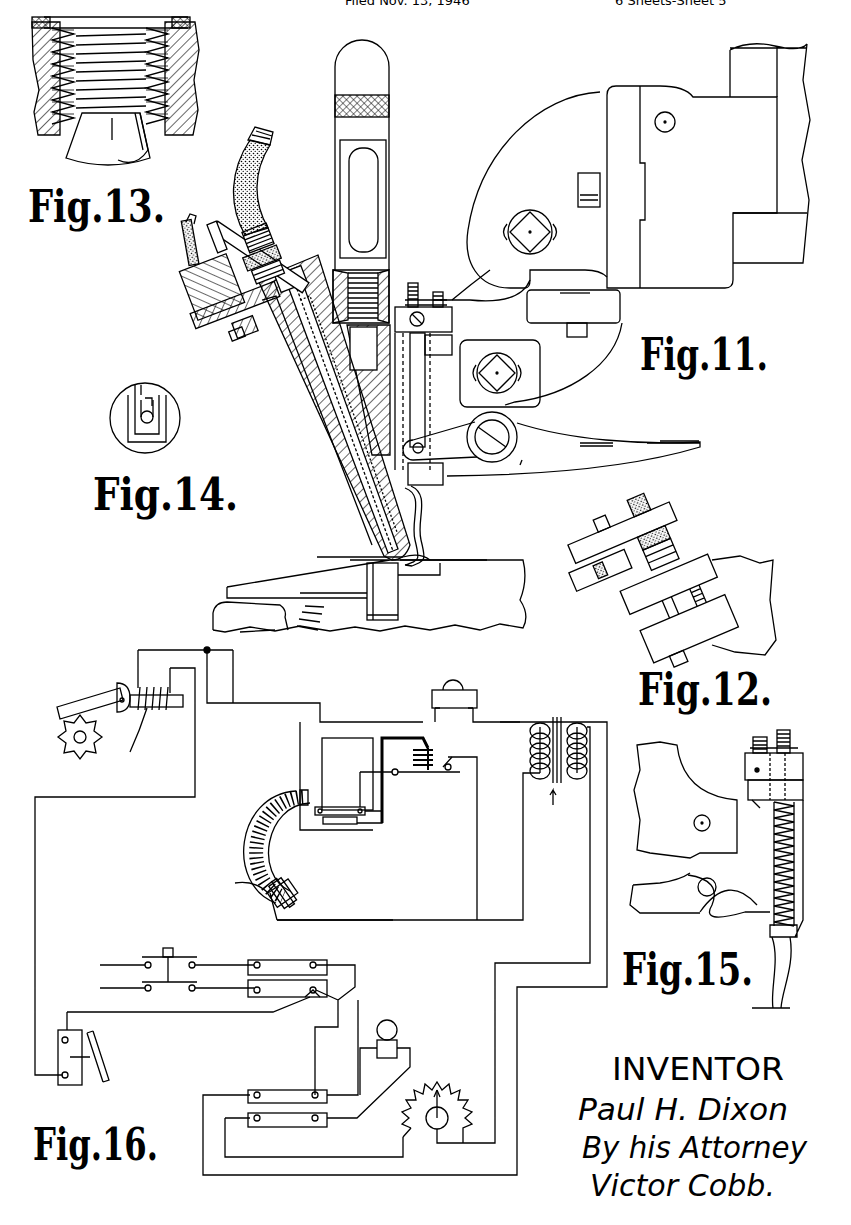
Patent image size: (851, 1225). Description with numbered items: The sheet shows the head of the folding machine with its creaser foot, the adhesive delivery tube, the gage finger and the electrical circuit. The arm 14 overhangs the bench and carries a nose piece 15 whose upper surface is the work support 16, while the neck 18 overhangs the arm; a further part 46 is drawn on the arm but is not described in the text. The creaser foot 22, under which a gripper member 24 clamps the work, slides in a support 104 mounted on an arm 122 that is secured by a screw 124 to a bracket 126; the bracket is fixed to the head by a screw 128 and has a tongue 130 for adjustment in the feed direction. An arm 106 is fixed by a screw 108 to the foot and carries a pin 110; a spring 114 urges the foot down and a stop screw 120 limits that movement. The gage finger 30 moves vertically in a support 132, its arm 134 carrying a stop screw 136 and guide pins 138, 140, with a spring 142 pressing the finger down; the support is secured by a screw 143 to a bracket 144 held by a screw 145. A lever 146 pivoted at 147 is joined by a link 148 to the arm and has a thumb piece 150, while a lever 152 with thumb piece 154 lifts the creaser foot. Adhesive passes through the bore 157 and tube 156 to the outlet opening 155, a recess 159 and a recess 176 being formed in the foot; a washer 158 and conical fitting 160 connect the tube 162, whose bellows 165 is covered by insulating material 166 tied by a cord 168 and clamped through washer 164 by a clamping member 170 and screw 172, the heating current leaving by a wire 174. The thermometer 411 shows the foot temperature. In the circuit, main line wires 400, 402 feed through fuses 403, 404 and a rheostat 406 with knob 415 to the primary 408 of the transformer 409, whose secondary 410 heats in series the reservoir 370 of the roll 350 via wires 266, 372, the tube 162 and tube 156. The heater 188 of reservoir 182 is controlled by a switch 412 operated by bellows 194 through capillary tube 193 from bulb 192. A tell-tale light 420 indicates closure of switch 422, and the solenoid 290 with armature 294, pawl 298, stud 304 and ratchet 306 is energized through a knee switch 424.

In FIG. 11, the arm 14 is at (507, 560).
In FIG. 11, the nose piece 15 is at (213, 614).
In FIG. 11, the work support 16 is at (292, 574).
In FIG. 11, the neck 18 is at (735, 46).
In FIG. 11, the creaser foot 22 is at (382, 517).
In FIG. 14, the creaser foot 22 is at (166, 407).
In FIG. 11, the gripper member 24 is at (398, 599).
In FIG. 11, the gage finger 30 is at (420, 534).
In FIG. 15, the gage finger 30 is at (782, 992).
In FIG. 11, the guide 46 is at (263, 633).
In FIG. 11, the support 104 is at (318, 427).
In FIG. 14, the support 104 is at (112, 433).
In FIG. 12, the support 104 is at (672, 664).
In FIG. 11, the arm 106 is at (262, 343).
In FIG. 12, the arm 106 is at (610, 590).
In FIG. 16, the arm 106 is at (236, 883).
In FIG. 11, the screw 108 is at (235, 332).
In FIG. 12, the pin 110 is at (650, 625).
In FIG. 11, the spring 114 is at (265, 355).
In FIG. 12, the stop screw 120 is at (712, 596).
In FIG. 11, the arm 122 is at (470, 270).
In FIG. 11, the screw 124 is at (532, 200).
In FIG. 11, the bracket 126 is at (538, 117).
In FIG. 11, the screw 128 is at (588, 176).
In FIG. 11, the tongue 130 is at (641, 214).
In FIG. 11, the support 132 is at (438, 485).
In FIG. 15, the support 132 is at (743, 912).
In FIG. 11, the arm 134 is at (452, 322).
In FIG. 15, the arm 134 is at (745, 762).
In FIG. 11, the stop screw 136 is at (441, 292).
In FIG. 15, the guide pin 138 is at (753, 741).
In FIG. 11, the guide pin 140 is at (413, 283).
In FIG. 15, the guide pin 140 is at (791, 722).
In FIG. 15, the spring 142 is at (774, 864).
In FIG. 11, the screw 143 is at (510, 376).
In FIG. 15, the screw 143 is at (697, 819).
In FIG. 11, the bracket 144 is at (589, 378).
In FIG. 15, the bracket 144 is at (690, 738).
In FIG. 11, the screw 145 is at (588, 333).
In FIG. 11, the lever 146 is at (519, 468).
In FIG. 11, the pivot 147 is at (497, 467).
In FIG. 15, the pivot 147 is at (700, 883).
In FIG. 11, the link 148 is at (425, 417).
In FIG. 11, the thumb piece 150 is at (591, 441).
In FIG. 15, the thumb piece 150 is at (661, 913).
In FIG. 11, the lever 152 is at (587, 468).
In FIG. 11, the thumb piece 154 is at (678, 441).
In FIG. 11, the outlet opening 155 is at (420, 568).
In FIG. 14, the outlet opening 155 is at (153, 418).
In FIG. 11, the tube 156 is at (340, 456).
In FIG. 16, the tube 156 is at (294, 888).
In FIG. 11, the bore 157 is at (300, 394).
In FIG. 11, the washer 158 is at (296, 275).
In FIG. 14, the recess 159 is at (151, 396).
In FIG. 13, the conical fitting 160 is at (149, 150).
In FIG. 11, the conical fitting 160 is at (284, 268).
In FIG. 12, the conical fitting 160 is at (680, 550).
In FIG. 11, the tube 162 is at (266, 132).
In FIG. 12, the tube 162 is at (646, 492).
In FIG. 16, the tube 162 is at (290, 798).
In FIG. 13, the washer 164 is at (197, 111).
In FIG. 11, the washer 164 is at (282, 252).
In FIG. 12, the washer 164 is at (674, 535).
In FIG. 13, the metal bellows 165 is at (196, 81).
In FIG. 13, the heat-insulating material 166 is at (186, 22).
In FIG. 11, the heat-insulating material 166 is at (262, 161).
In FIG. 13, the cord 168 is at (200, 32).
In FIG. 11, the cord 168 is at (268, 222).
In FIG. 11, the clamping member 170 is at (190, 272).
In FIG. 12, the clamping member 170 is at (668, 510).
In FIG. 11, the screw 172 is at (220, 240).
In FIG. 12, the screw 172 is at (597, 520).
In FIG. 11, the wire 174 is at (188, 250).
In FIG. 12, the wire 174 is at (582, 568).
In FIG. 16, the wire 174 is at (391, 920).
In FIG. 14, the recess 176 is at (134, 393).
In FIG. 16, the adhesive reservoir 182 is at (349, 738).
In FIG. 16, the electric heating element 188 is at (382, 812).
In FIG. 16, the bulb 192 is at (343, 824).
In FIG. 16, the capillary tube 193 is at (400, 735).
In FIG. 16, the bellows 194 is at (433, 750).
In FIG. 16, the wire 266 is at (334, 722).
In FIG. 16, the solenoid 290 is at (150, 712).
In FIG. 16, the armature 294 is at (132, 750).
In FIG. 16, the pawl 298 is at (79, 700).
In FIG. 16, the stud 304 is at (74, 739).
In FIG. 16, the ratchet member 306 is at (84, 760).
In FIG. 16, the roll 350 is at (460, 682).
In FIG. 16, the reservoir 370 is at (477, 695).
In FIG. 16, the wire 372 is at (514, 722).
In FIG. 16, the main line wire 400 is at (118, 965).
In FIG. 16, the main line wire 402 is at (118, 990).
In FIG. 16, the fuses 403 is at (322, 985).
In FIG. 16, the fuses 404 is at (252, 1100).
In FIG. 16, the rheostat 406 is at (450, 1085).
In FIG. 16, the primary 408 is at (580, 727).
In FIG. 16, the step-down transformer 409 is at (559, 811).
In FIG. 16, the secondary 410 is at (542, 727).
In FIG. 11, the thermometer 411 is at (389, 125).
In FIG. 16, the thermostatic switch 412 is at (455, 757).
In FIG. 16, the adjusting knob 415 is at (426, 1122).
In FIG. 16, the tell-tale light 420 is at (394, 1024).
In FIG. 16, the switch 422 is at (151, 948).
In FIG. 16, the knee switch 424 is at (103, 1065).